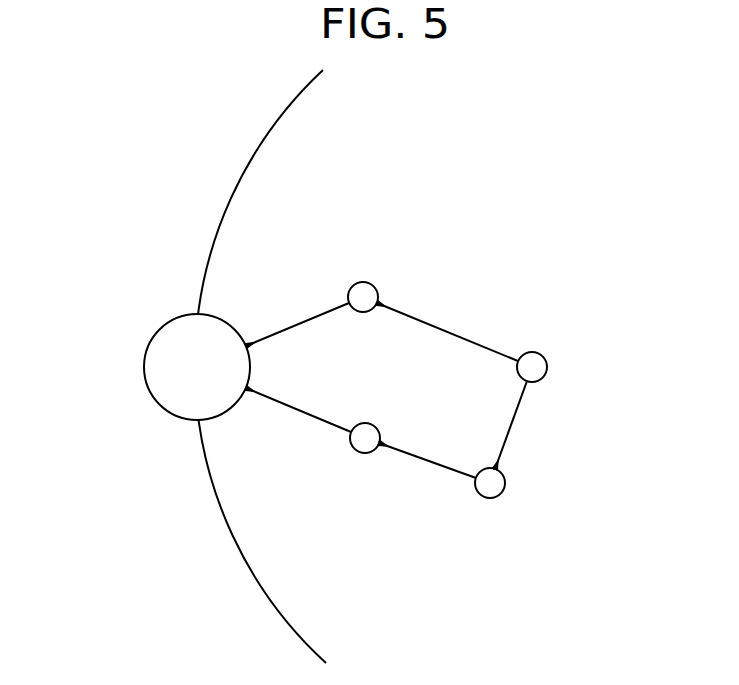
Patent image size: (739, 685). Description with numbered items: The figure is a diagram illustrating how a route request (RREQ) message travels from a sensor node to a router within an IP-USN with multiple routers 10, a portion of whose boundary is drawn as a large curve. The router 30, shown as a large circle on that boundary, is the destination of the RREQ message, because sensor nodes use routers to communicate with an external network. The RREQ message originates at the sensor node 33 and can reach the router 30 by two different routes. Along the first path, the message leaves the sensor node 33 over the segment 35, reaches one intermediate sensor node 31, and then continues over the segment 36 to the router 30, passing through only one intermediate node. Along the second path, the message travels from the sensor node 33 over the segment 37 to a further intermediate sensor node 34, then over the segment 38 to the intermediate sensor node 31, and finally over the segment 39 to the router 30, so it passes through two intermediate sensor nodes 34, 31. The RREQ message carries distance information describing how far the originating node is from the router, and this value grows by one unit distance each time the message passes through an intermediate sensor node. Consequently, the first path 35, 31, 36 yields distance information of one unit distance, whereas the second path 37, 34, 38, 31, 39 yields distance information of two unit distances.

The IP-USN with multiple routers 10 is at (290, 103).
The router 30 is at (143, 365).
The intermediate sensor node 31 is at (376, 295).
The sensor node 33 is at (547, 367).
The intermediate sensor node 34 is at (505, 487).
The first path segment 35 is at (473, 337).
The first path segment 36 is at (292, 330).
The second path segment 37 is at (512, 423).
The second path segment 38 is at (432, 466).
The second path segment 39 is at (290, 409).